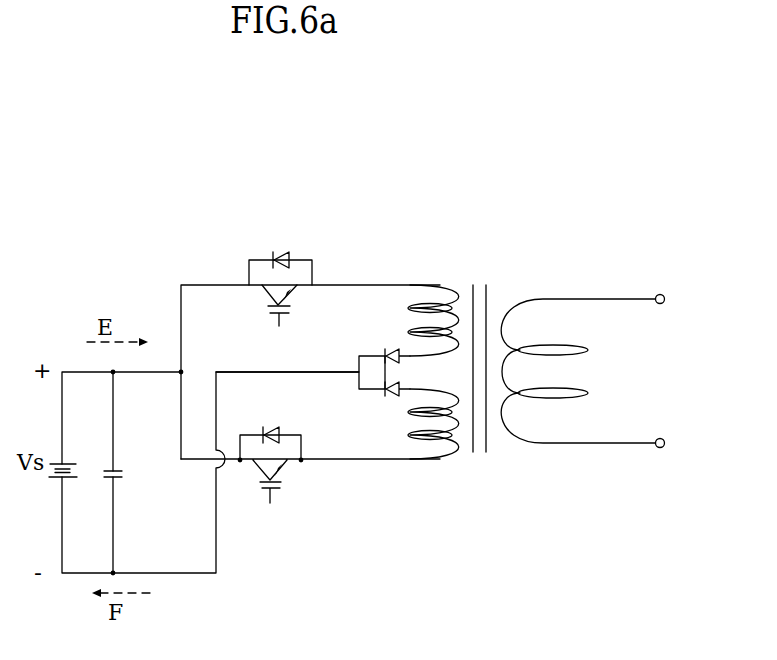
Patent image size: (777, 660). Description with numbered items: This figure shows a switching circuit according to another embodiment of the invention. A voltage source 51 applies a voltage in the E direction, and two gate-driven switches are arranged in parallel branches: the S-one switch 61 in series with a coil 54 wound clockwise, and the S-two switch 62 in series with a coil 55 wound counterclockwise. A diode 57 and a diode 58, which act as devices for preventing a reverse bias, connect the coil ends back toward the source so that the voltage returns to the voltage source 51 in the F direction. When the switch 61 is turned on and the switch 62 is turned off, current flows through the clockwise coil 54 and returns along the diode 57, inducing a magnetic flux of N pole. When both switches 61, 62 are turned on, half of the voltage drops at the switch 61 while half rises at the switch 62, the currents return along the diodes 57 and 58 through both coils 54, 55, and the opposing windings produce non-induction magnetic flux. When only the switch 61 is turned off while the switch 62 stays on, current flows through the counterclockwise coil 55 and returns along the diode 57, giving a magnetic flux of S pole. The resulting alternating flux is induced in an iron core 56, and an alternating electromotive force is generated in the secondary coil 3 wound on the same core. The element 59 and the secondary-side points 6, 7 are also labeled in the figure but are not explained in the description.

The voltage source 51 is at (55, 478).
The inverter circuit 59 is at (357, 371).
The S1 switch 61 is at (280, 326).
The S2 switch 62 is at (271, 496).
The diode 57 is at (389, 350).
The diode 58 is at (388, 397).
The coil wound clockwise 54 is at (447, 286).
The coil wound counterclockwise 55 is at (441, 460).
The iron core 56 is at (487, 440).
The secondary coil 3 is at (588, 350).
The output terminal 6 is at (665, 299).
The output terminal 7 is at (665, 443).